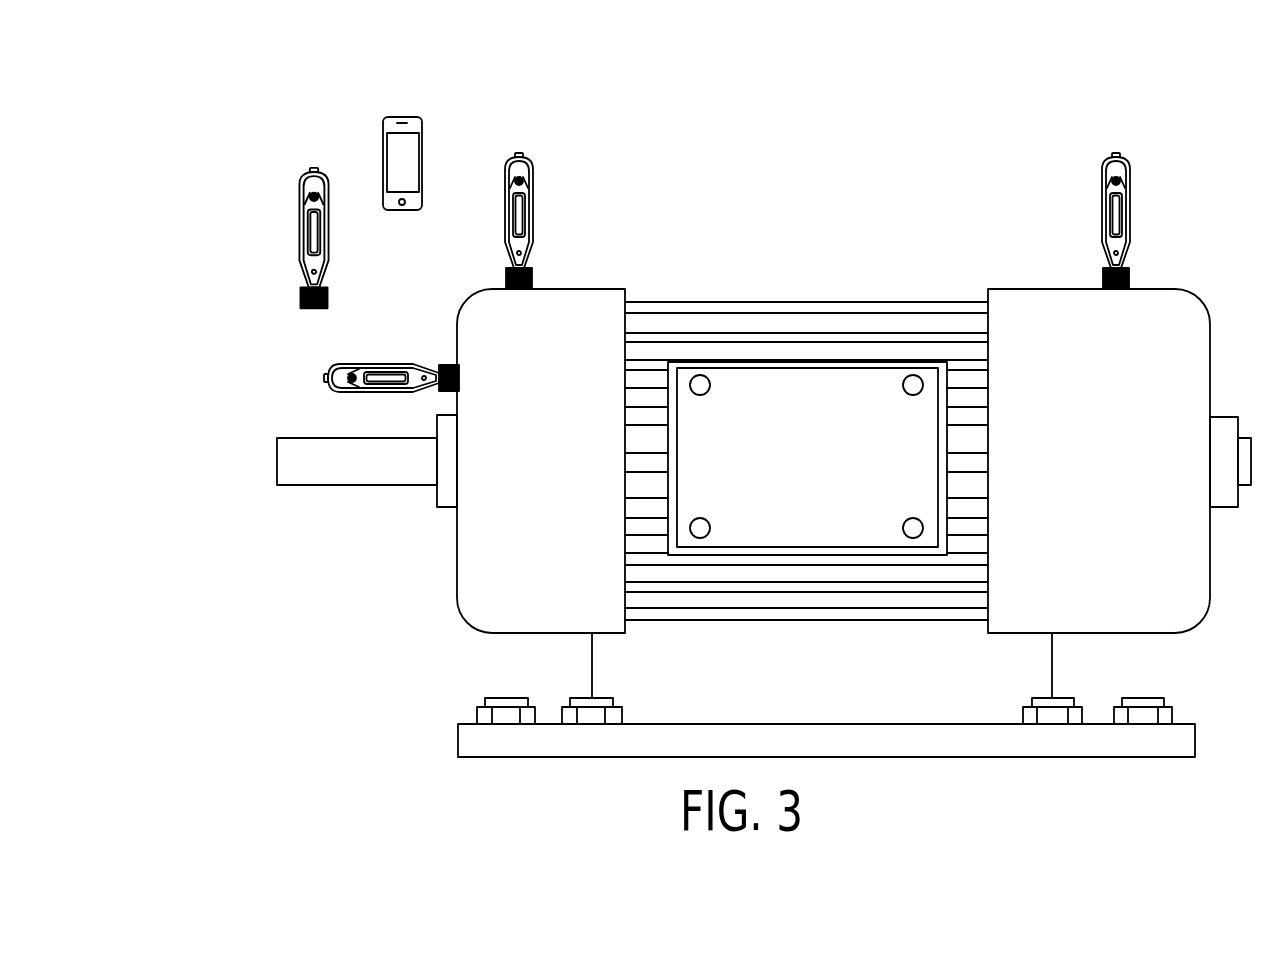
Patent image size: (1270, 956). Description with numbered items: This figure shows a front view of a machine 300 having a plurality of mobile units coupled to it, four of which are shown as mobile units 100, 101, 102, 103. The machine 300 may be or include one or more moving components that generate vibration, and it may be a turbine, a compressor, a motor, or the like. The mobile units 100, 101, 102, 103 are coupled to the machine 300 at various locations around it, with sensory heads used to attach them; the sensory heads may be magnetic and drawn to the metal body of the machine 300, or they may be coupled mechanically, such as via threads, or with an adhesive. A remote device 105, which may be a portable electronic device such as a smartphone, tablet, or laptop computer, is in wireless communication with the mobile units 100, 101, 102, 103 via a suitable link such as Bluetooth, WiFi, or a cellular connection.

The mobile unit 100 is at (312, 229).
The mobile unit 101 is at (386, 378).
The mobile unit 102 is at (522, 203).
The mobile unit 103 is at (1122, 203).
The remote device 105 is at (407, 115).
The machine 300 is at (842, 301).